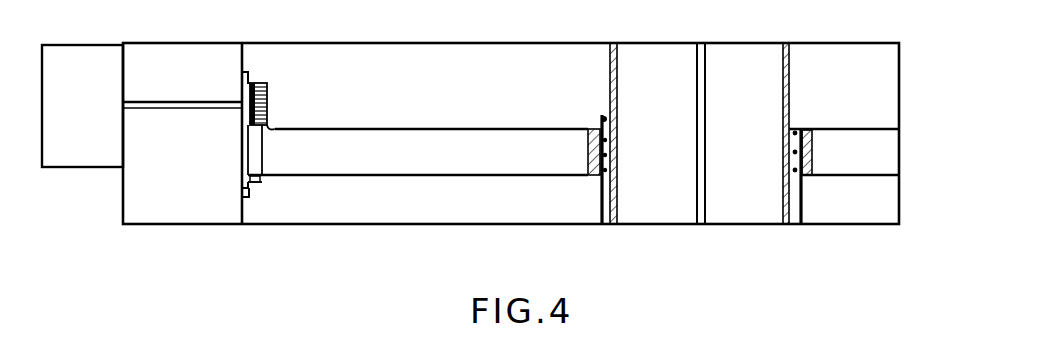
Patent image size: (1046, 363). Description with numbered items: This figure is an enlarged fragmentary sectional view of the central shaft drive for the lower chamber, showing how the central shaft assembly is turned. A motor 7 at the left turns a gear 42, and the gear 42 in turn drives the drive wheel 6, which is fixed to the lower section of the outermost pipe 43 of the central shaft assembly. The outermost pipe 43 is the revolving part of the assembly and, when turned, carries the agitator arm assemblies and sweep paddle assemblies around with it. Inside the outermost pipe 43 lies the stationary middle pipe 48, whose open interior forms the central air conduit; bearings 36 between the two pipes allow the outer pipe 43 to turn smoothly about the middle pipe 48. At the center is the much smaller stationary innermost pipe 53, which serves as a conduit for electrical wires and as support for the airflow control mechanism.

The motor 7 is at (90, 113).
The gear 42 is at (267, 103).
The drive wheel 6 is at (369, 152).
The bearings 36 is at (602, 116).
The outermost pipe 43 is at (594, 201).
The middle pipe 48 is at (625, 88).
The innermost pipe 53 is at (713, 88).